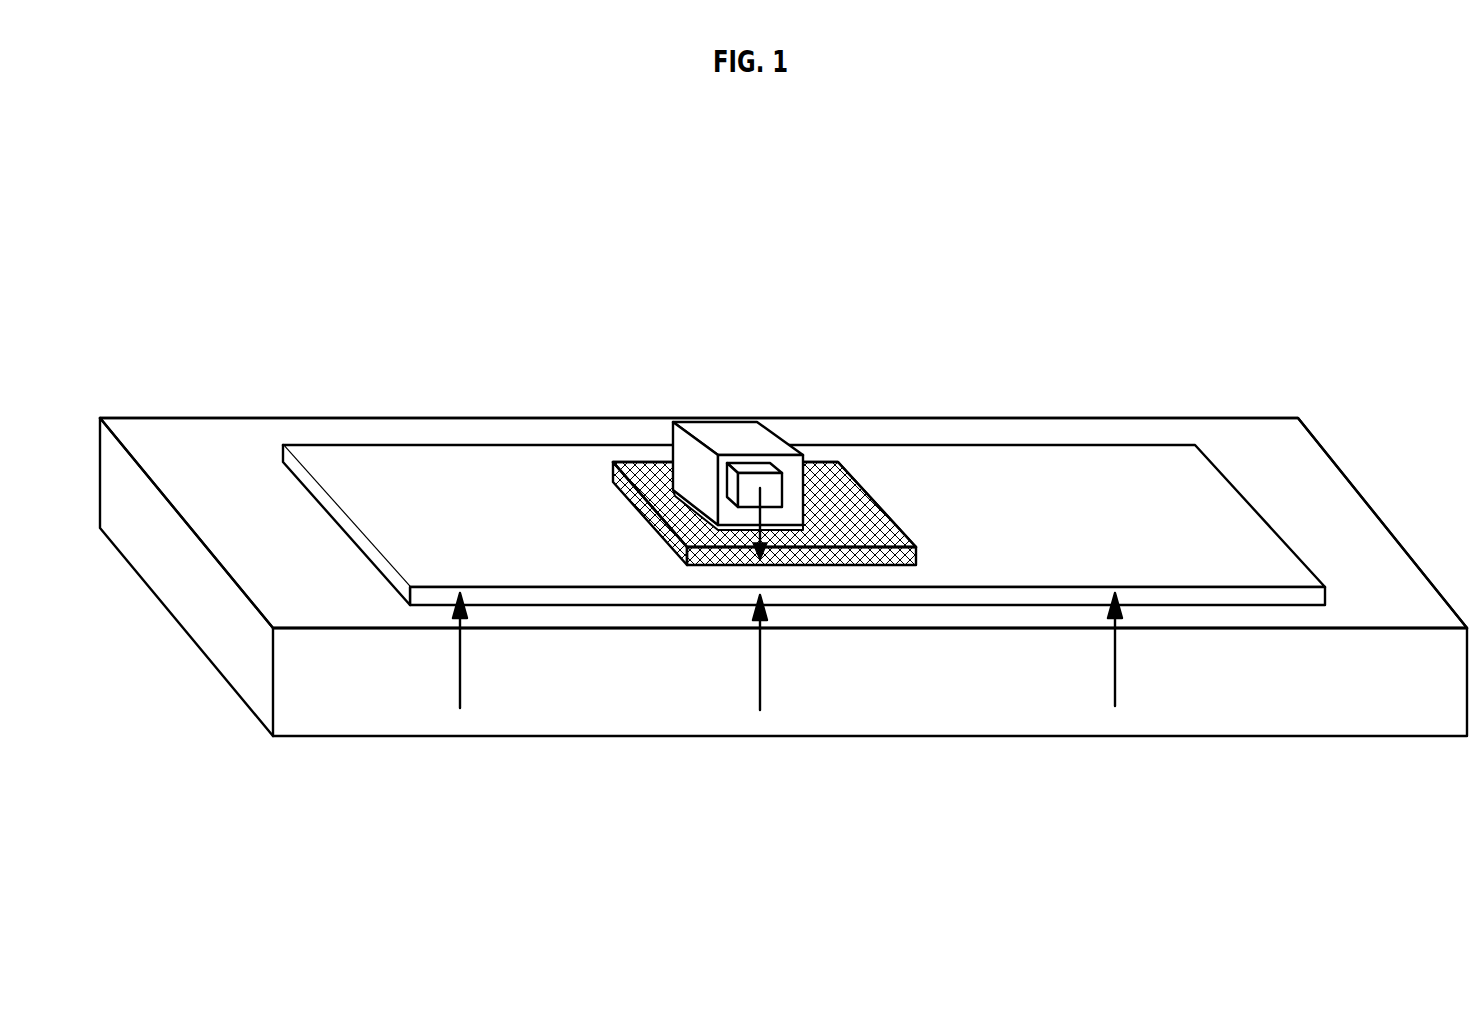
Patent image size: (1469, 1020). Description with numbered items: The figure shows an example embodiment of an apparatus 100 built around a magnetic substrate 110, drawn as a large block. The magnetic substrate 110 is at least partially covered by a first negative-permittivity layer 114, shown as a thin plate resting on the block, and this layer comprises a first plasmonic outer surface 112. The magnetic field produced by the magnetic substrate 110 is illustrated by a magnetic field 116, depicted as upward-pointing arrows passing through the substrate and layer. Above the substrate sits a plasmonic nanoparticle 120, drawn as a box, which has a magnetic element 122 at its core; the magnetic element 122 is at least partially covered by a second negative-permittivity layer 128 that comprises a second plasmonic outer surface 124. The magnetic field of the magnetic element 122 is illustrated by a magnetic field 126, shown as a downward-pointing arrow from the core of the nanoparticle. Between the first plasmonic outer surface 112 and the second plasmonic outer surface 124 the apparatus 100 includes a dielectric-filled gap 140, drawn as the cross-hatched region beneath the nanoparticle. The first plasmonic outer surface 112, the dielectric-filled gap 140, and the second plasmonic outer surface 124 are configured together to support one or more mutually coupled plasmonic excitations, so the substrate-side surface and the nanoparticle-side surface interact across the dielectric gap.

The apparatus 100 is at (247, 123).
The magnetic substrate 110 is at (377, 738).
The first plasmonic outer surface 112 is at (227, 450).
The first negative-permittivity layer 114 is at (418, 470).
The magnetic field 116 is at (757, 677).
The plasmonic nanoparticle 120 is at (735, 420).
The magnetic element 122 is at (783, 491).
The second plasmonic outer surface 124 is at (683, 545).
The magnetic field 126 is at (763, 517).
The second negative-permittivity layer 128 is at (699, 521).
The dielectric-filled gap 140 is at (868, 513).